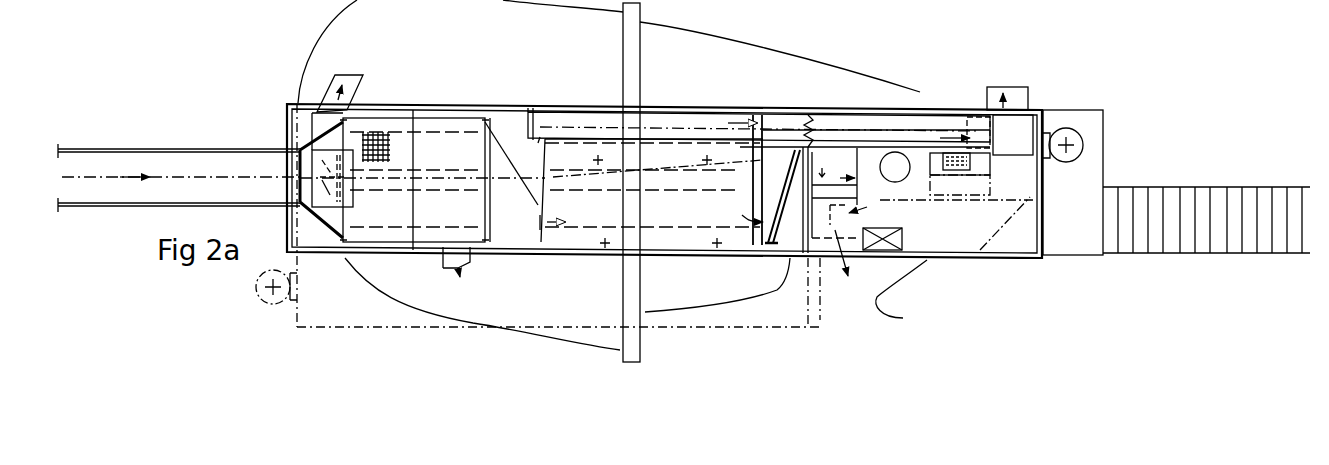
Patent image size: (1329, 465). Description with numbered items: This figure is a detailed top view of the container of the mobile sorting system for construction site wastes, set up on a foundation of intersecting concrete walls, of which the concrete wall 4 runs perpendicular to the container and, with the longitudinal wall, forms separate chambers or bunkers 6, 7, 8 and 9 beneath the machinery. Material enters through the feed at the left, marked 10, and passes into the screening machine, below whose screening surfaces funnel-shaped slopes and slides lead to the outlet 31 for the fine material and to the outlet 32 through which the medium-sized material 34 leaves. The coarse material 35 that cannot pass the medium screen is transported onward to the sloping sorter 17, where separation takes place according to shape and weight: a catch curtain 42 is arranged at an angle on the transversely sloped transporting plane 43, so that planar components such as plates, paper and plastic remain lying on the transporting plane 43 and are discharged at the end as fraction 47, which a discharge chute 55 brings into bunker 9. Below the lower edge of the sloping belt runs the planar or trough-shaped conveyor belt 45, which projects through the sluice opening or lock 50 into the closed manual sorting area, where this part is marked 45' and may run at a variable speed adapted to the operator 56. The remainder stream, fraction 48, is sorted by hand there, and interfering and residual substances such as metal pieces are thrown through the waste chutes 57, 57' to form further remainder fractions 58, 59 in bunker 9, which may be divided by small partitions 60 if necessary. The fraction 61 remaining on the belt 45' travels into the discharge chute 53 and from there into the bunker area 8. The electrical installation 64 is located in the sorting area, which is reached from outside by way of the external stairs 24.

The concrete wall 4 is at (623, 44).
The bunker 6 is at (496, 46).
The bunker 7 is at (594, 301).
The bunker area 8 is at (852, 95).
The bunker portion 9 is at (705, 298).
The feed pipe 10 is at (87, 160).
The sloping sorter 17 is at (673, 240).
The external stairs 24 is at (1183, 187).
The outlet 31 is at (350, 96).
The outlet 32 is at (452, 270).
The medium-sized material 34 is at (467, 271).
The coarse material 35 is at (547, 222).
The catch curtain 42 is at (667, 170).
The transporting plane 43 is at (617, 216).
The conveyor belt 45 is at (759, 101).
The conveyor belt section 45' is at (940, 87).
The fraction 47 is at (742, 180).
The remainder stream 48 is at (728, 123).
The sluice opening 50 is at (810, 113).
The discharge chute 53 is at (1043, 110).
The discharge chute 55 is at (783, 196).
The operator 56 is at (900, 182).
The waste chute 57 is at (848, 193).
The waste chute 57' is at (864, 215).
The remainder fraction 58 is at (841, 267).
The remainder fraction 59 is at (922, 297).
The partition 60 is at (822, 327).
The fraction 61 is at (962, 133).
The electrical installation 64 is at (903, 240).